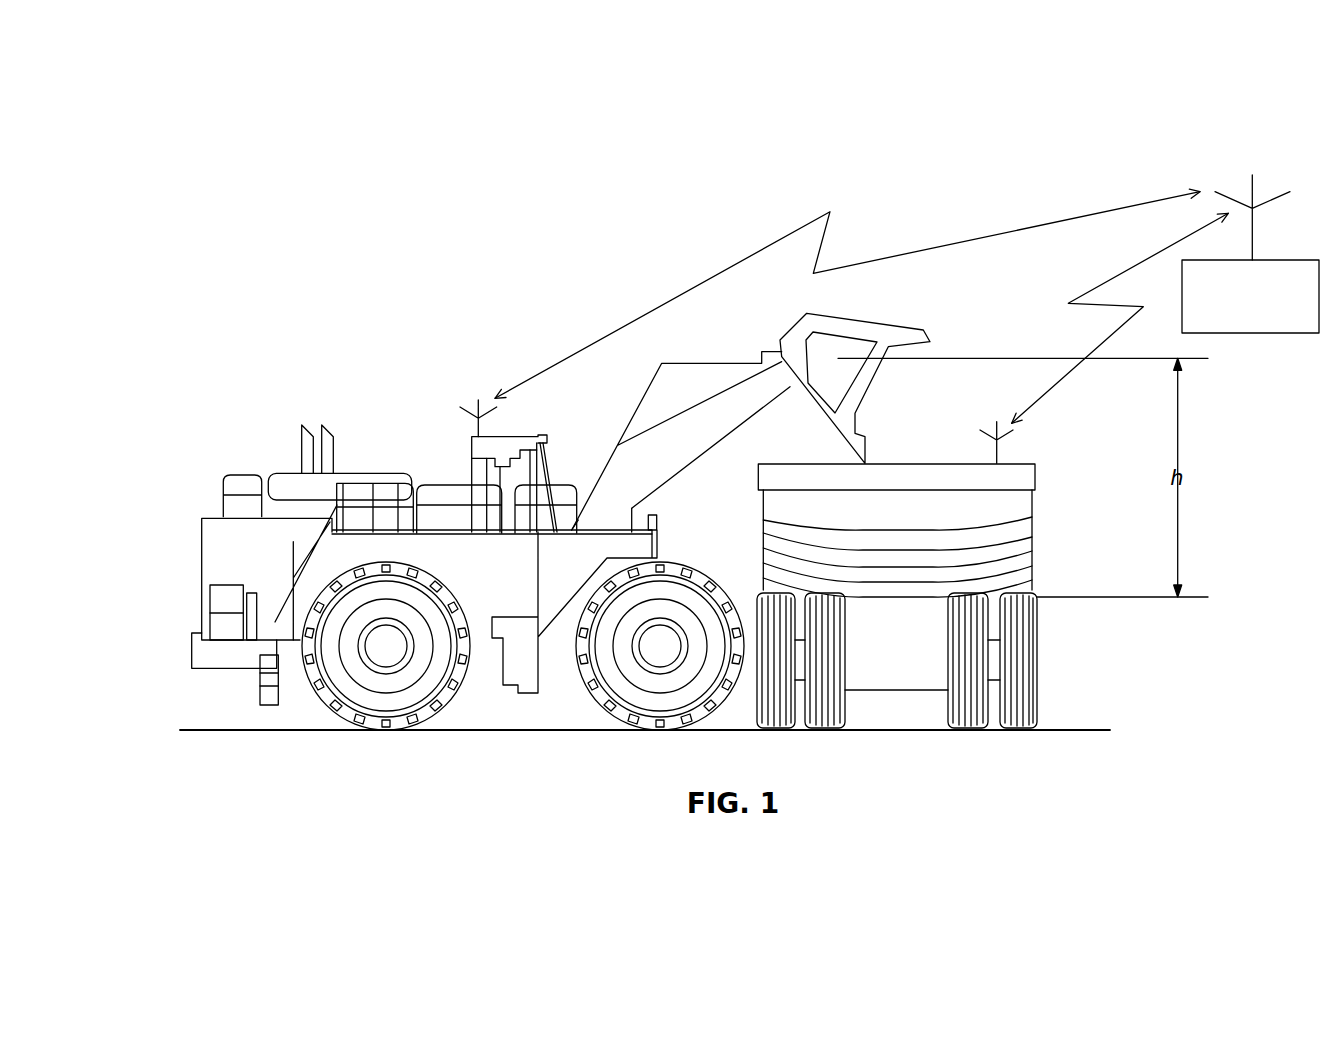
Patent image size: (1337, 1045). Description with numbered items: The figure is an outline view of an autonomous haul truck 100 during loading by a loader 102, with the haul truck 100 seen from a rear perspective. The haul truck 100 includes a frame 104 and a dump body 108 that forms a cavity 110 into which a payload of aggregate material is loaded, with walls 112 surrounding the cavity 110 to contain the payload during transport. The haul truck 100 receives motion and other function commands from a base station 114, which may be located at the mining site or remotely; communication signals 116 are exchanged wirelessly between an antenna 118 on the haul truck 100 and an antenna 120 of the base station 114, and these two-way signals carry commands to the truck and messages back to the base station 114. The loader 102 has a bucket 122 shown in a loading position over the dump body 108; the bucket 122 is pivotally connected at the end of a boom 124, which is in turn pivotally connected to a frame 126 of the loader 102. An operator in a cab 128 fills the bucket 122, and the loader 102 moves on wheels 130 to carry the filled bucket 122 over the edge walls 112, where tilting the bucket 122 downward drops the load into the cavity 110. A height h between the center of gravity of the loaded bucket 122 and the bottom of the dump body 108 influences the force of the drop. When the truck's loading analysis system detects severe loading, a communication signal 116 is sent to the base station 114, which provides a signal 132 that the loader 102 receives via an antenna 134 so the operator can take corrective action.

The haul truck 100 is at (1065, 572).
The loader 102 is at (373, 337).
The frame 104 is at (1023, 685).
The dump body 108 is at (1018, 480).
The cavity 110 is at (897, 497).
The walls 112 is at (1027, 527).
The base station 114 is at (1237, 323).
The communication signals 116 is at (1092, 288).
The antenna 118 is at (998, 452).
The antenna 120 is at (1253, 233).
The bucket 122 is at (863, 330).
The boom 124 is at (685, 378).
The frame 126 is at (492, 675).
The cab 128 is at (477, 470).
The wheels 130 is at (395, 705).
The signal 132 is at (790, 232).
The antenna 134 is at (474, 420).